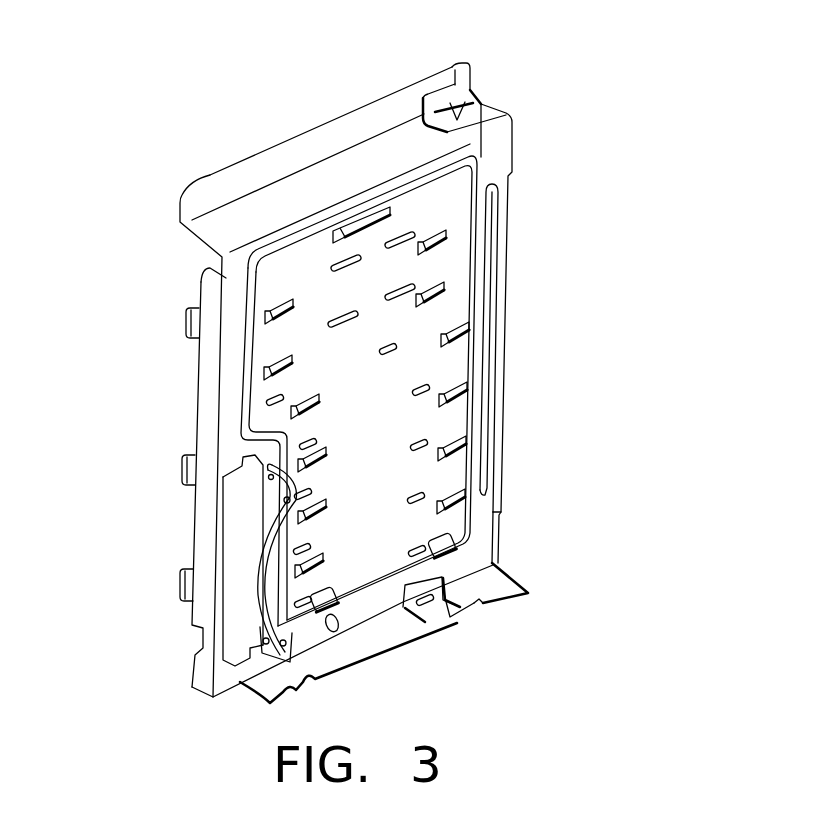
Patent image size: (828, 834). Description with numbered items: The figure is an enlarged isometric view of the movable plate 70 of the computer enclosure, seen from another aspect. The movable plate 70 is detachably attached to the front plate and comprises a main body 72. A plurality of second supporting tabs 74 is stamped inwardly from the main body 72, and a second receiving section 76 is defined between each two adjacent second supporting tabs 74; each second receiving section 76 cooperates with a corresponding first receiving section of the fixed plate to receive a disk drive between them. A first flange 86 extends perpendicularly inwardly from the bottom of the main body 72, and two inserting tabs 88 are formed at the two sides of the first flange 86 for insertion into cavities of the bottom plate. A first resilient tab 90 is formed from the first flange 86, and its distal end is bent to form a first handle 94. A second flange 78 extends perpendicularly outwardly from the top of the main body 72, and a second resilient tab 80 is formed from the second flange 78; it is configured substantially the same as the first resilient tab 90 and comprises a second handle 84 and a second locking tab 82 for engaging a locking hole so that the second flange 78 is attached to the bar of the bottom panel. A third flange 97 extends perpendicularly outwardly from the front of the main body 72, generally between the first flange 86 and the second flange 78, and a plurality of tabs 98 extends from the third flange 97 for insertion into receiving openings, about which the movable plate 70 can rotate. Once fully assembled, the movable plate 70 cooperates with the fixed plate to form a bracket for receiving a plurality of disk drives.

The movable plate 70 is at (520, 298).
The main body 72 is at (415, 348).
The second supporting tabs 74 is at (440, 238).
The second receiving section 76 is at (305, 431).
The second flange 78 is at (210, 227).
The second resilient tab 80 is at (481, 105).
The second locking tab 82 is at (472, 95).
The second handle 84 is at (440, 114).
The first flange 86 is at (497, 587).
The inserting tabs 88 is at (478, 610).
The first resilient tab 90 is at (450, 623).
The first handle 94 is at (500, 543).
The third flange 97 is at (202, 525).
The tabs 98 is at (182, 582).